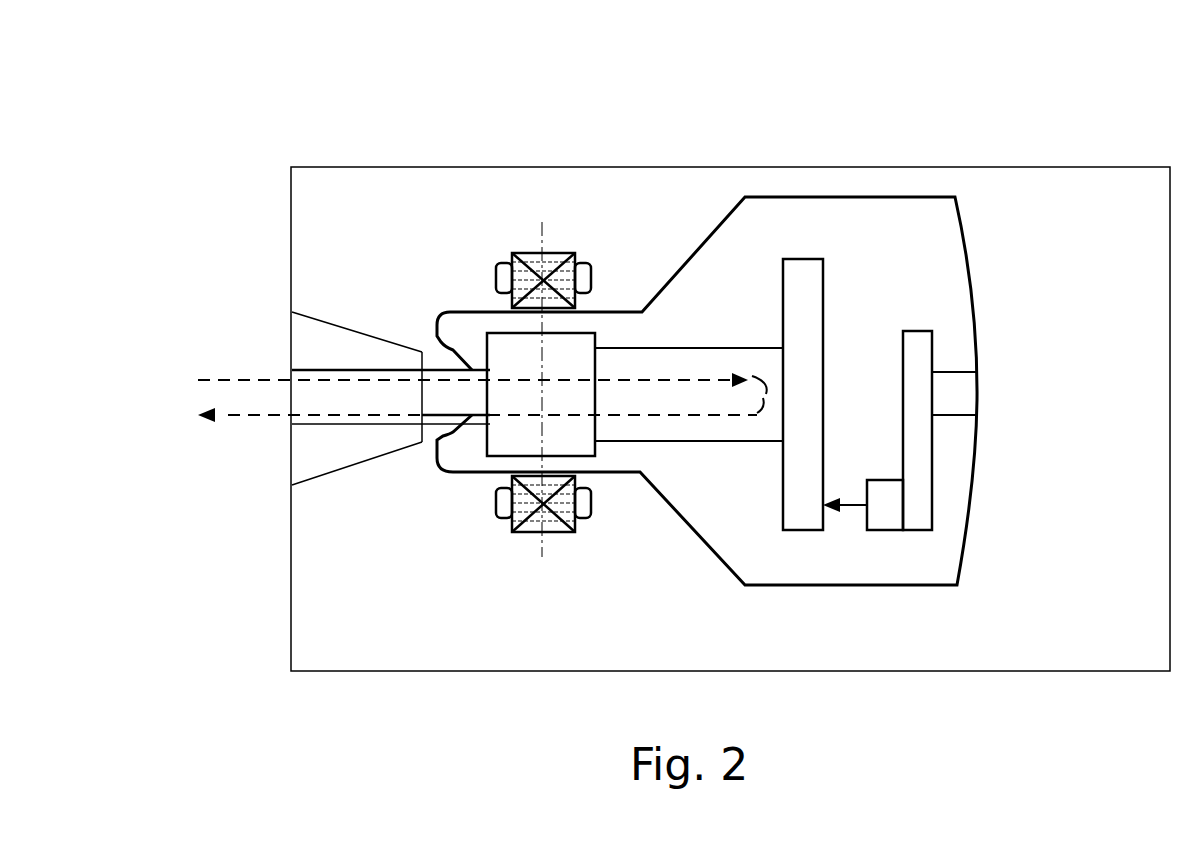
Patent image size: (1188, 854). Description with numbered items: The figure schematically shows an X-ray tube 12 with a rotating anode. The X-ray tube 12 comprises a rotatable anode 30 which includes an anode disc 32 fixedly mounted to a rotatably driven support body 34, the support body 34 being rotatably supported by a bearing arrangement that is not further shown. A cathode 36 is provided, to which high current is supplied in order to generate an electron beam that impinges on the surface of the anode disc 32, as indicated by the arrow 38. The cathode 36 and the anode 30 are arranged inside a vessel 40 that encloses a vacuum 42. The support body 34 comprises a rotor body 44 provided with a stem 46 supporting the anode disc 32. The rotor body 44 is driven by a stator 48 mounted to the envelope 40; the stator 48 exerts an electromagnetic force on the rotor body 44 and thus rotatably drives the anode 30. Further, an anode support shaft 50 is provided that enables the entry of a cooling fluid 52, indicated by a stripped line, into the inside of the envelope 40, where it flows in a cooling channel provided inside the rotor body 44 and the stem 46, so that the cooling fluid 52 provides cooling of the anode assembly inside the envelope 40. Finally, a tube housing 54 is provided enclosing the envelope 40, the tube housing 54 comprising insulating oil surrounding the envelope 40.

The X-ray tube 12 is at (838, 100).
The rotatable anode 30 is at (697, 272).
The anode disc 32 is at (823, 328).
The support body 34 is at (613, 462).
The cathode 36 is at (887, 517).
The arrow 38 is at (850, 508).
The vessel 40 is at (977, 350).
The vacuum 42 is at (938, 255).
The rotor body 44 is at (500, 445).
The stem 46 is at (727, 347).
The stator 48 is at (535, 253).
The anode support shaft 50 is at (436, 368).
The cooling fluid 52 is at (237, 378).
The tube housing 54 is at (347, 166).